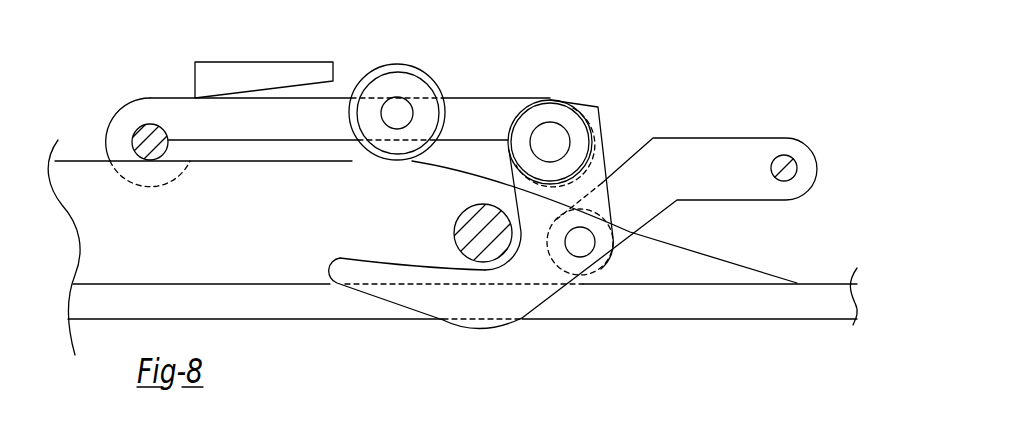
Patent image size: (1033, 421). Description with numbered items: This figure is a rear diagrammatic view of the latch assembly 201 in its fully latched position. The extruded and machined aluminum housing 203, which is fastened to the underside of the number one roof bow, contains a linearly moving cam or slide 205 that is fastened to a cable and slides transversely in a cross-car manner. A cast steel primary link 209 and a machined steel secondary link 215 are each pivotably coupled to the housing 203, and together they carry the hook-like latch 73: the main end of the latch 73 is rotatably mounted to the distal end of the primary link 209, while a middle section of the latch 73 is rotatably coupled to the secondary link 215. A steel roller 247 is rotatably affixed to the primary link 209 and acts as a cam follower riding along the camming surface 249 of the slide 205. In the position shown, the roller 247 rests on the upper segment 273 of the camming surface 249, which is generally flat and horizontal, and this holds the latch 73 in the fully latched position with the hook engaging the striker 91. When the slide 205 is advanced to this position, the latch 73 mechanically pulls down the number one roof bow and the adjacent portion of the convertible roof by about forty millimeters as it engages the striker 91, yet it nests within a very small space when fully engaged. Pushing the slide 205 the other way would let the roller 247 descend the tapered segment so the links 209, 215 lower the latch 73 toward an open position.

The latch assembly 201 is at (622, 100).
The primary link 209 is at (272, 117).
The roller 247 is at (440, 92).
The upper segment 273 is at (235, 158).
The striker 91 is at (473, 238).
The secondary link 215 is at (708, 165).
The camming surface 249 is at (697, 253).
The latch 73 is at (480, 328).
The slide 205 is at (292, 265).
The housing 203 is at (617, 300).